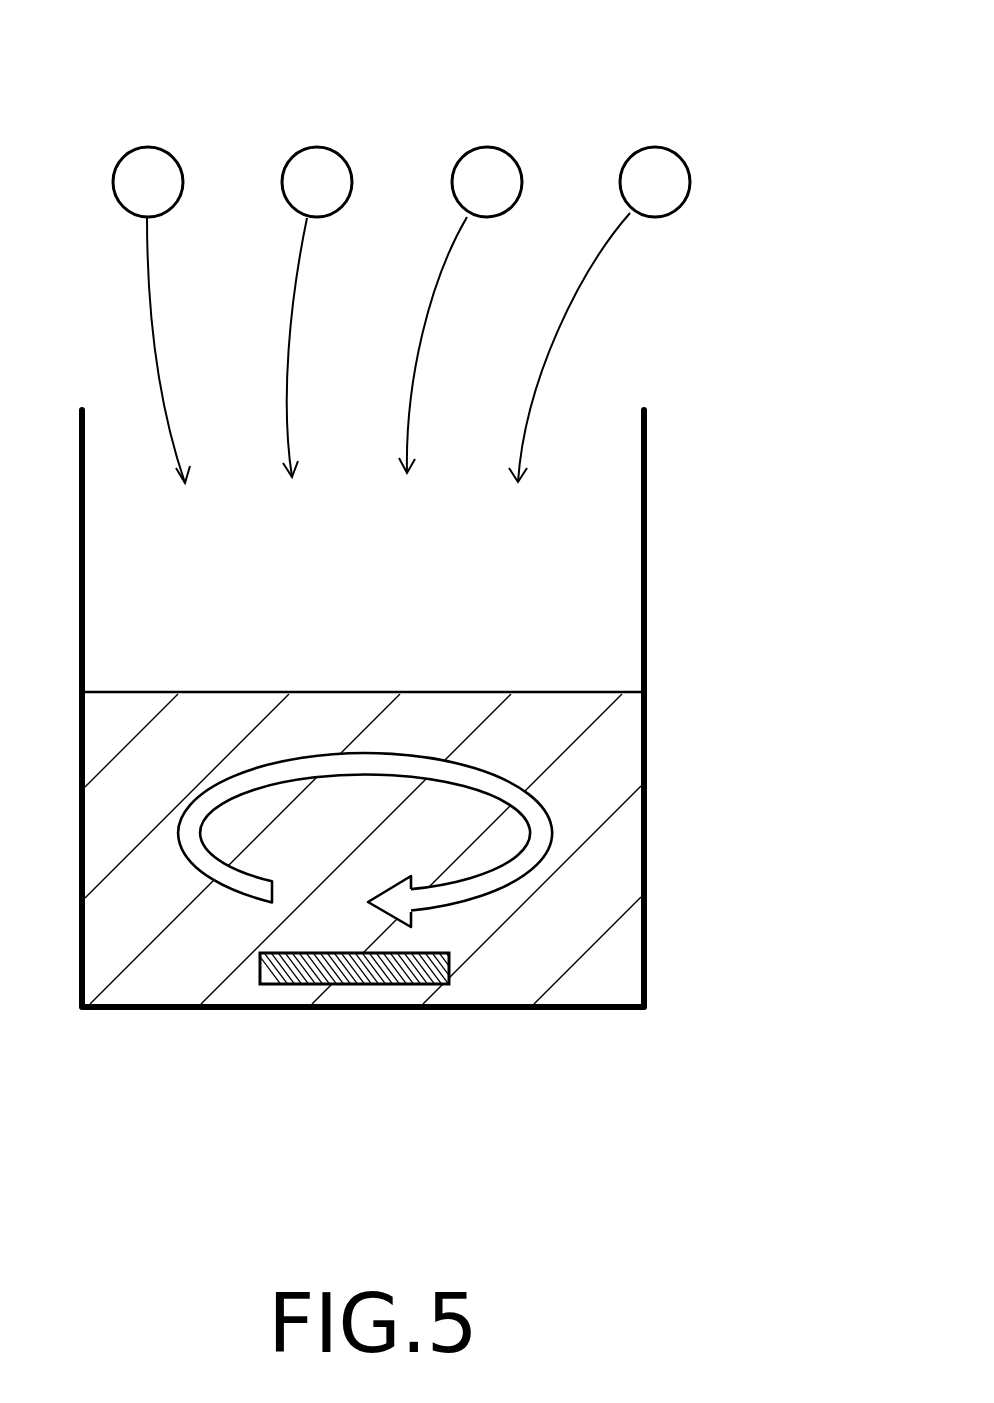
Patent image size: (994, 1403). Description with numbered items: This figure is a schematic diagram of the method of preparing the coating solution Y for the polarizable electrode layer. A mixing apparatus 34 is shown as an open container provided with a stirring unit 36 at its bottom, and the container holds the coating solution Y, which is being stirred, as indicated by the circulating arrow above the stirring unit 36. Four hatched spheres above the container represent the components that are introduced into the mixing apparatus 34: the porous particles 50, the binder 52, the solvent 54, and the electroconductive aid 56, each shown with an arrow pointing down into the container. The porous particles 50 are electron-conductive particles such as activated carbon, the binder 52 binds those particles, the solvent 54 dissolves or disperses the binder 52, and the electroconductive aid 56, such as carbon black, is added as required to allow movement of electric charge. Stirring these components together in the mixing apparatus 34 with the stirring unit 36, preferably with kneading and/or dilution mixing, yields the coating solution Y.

The mixing apparatus 34 is at (647, 519).
The stirring unit 36 is at (362, 972).
The coating solution for polarizable electrode layer Y is at (622, 855).
The porous particles 50 is at (148, 147).
The binder 52 is at (318, 147).
The solvent 54 is at (487, 147).
The electroconductive aid 56 is at (656, 147).